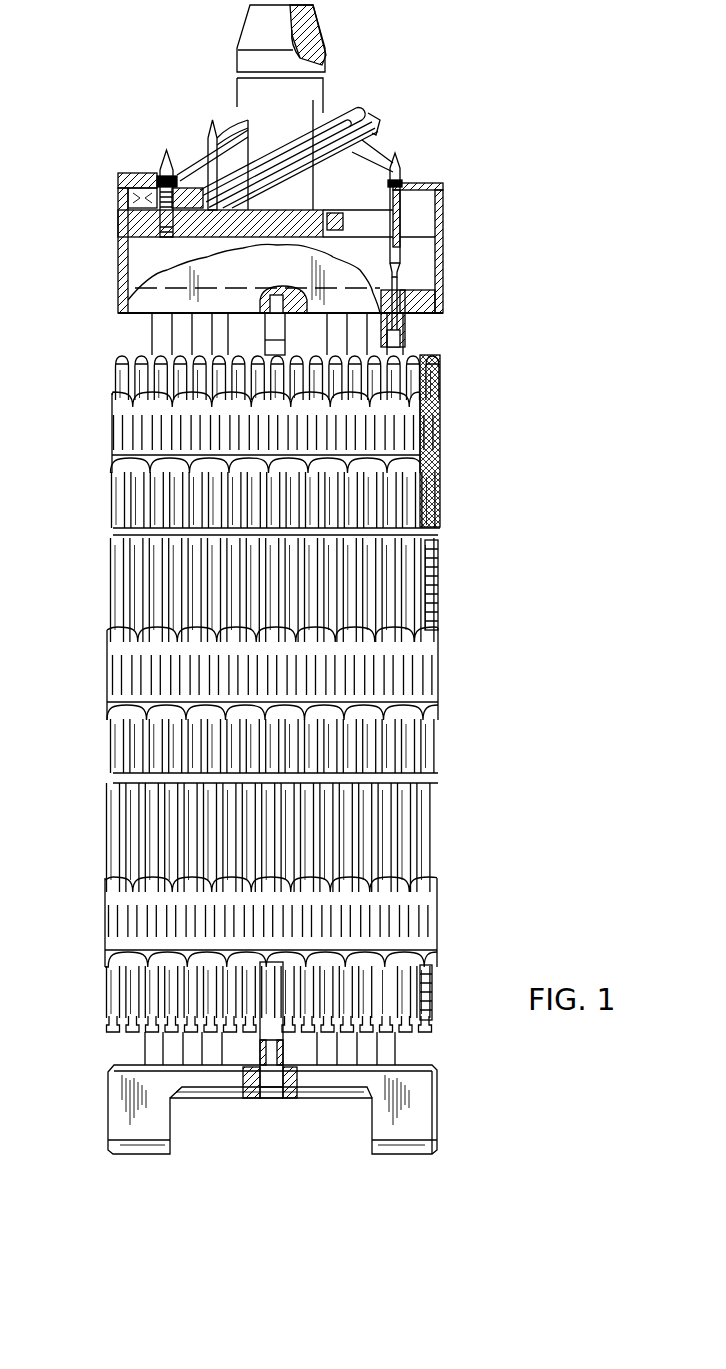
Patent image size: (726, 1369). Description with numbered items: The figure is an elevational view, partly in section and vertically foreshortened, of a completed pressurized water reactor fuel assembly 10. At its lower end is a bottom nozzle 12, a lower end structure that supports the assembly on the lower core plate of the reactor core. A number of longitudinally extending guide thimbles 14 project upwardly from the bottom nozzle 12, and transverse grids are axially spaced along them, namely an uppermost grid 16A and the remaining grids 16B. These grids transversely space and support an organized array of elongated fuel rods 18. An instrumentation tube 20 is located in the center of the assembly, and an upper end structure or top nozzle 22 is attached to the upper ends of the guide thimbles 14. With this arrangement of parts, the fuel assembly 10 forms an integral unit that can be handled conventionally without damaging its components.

The fuel assembly 10 is at (477, 192).
The bottom nozzle 12 is at (437, 1105).
The guide thimbles 14 is at (153, 335).
The uppermost grid 16A is at (112, 418).
The remaining grids 16B is at (438, 690).
The fuel rods 18 is at (428, 840).
The instrumentation tube 20 is at (285, 356).
The top nozzle 22 is at (445, 245).